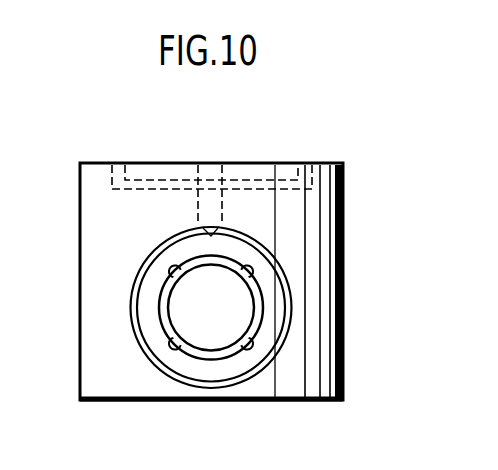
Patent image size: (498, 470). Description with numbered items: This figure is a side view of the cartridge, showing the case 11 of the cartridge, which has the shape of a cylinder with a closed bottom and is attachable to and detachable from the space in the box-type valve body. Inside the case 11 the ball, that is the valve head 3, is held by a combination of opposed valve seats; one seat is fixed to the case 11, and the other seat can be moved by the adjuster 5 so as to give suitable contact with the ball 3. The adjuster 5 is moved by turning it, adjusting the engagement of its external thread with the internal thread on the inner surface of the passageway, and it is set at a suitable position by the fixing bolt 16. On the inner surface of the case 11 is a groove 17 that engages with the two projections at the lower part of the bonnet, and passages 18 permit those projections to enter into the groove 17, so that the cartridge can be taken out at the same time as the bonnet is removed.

The case 11 is at (272, 146).
The groove 17 is at (115, 221).
The passages 18 is at (118, 172).
The fixing bolt 16 is at (210, 170).
The adjuster 5 is at (155, 333).
The valve head 3 is at (203, 332).